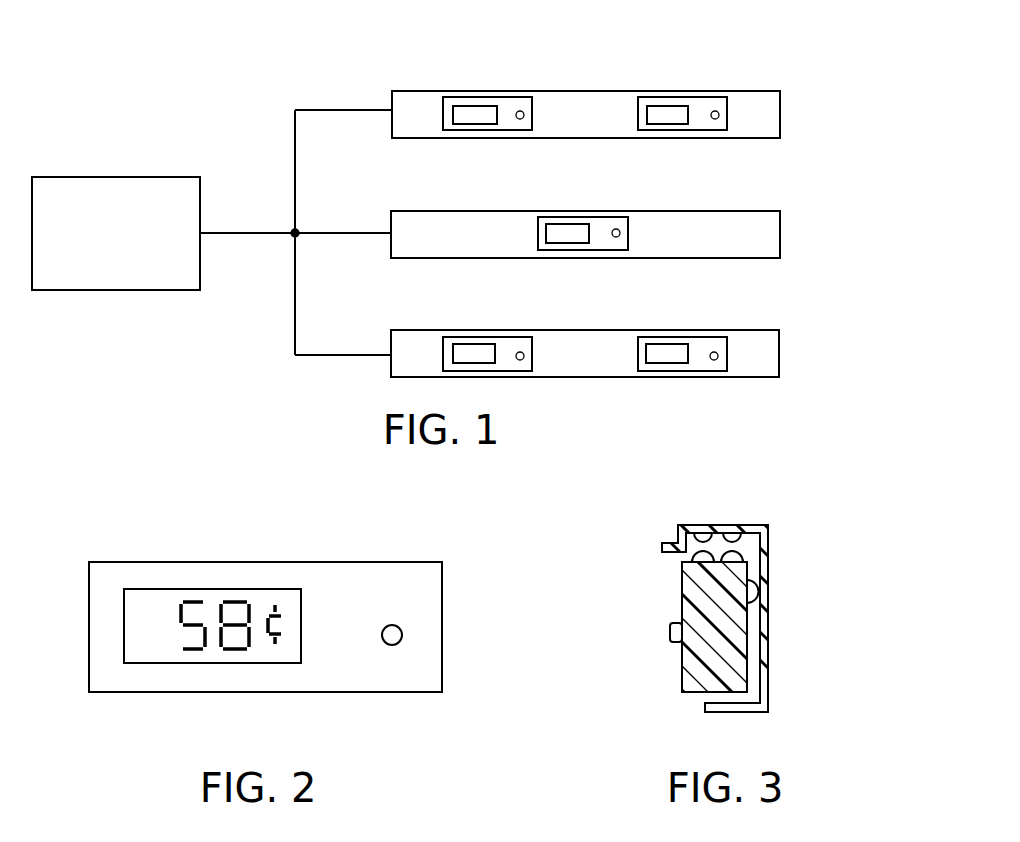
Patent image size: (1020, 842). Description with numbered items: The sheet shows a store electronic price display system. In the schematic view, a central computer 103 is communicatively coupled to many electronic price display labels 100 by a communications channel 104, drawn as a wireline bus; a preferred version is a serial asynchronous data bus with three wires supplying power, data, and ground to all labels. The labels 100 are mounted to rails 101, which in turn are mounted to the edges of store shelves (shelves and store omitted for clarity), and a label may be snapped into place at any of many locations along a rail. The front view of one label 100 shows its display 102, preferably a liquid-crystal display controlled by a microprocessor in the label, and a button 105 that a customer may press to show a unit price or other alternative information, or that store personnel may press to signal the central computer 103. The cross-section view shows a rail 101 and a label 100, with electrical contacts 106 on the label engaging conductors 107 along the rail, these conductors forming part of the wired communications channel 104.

In FIG. 1, the electronic price display label 100 is at (507, 105).
In FIG. 2, the electronic price display label 100 is at (295, 542).
In FIG. 3, the electronic price display label 100 is at (682, 661).
In FIG. 1, the rail 101 is at (782, 117).
In FIG. 3, the rail 101 is at (768, 700).
In FIG. 2, the display 102 is at (172, 657).
In FIG. 1, the central computer 103 is at (124, 177).
In FIG. 1, the communications channel 104 is at (260, 230).
In FIG. 2, the button 105 is at (392, 645).
In FIG. 3, the button 105 is at (670, 632).
In FIG. 3, the electrical contacts 106 is at (740, 554).
In FIG. 3, the conductors 107 is at (745, 535).